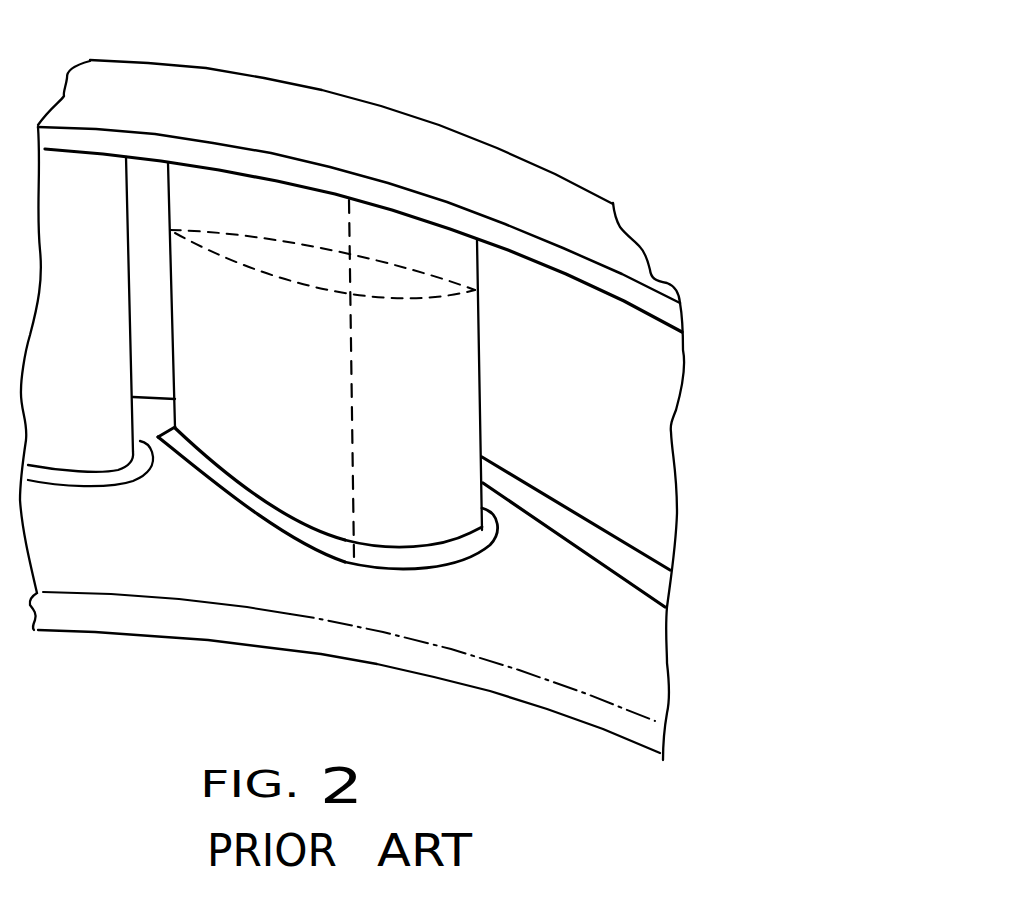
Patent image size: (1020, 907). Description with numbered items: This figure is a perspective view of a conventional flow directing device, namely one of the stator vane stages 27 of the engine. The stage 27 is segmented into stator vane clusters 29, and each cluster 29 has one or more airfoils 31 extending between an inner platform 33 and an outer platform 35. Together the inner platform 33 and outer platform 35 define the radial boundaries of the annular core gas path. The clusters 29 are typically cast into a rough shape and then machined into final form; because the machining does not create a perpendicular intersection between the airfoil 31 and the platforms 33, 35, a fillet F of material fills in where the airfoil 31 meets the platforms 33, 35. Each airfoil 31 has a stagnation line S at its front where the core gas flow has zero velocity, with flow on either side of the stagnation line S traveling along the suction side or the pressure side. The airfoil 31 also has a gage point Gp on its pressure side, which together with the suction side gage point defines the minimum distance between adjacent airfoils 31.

The stator vane stage 27 is at (628, 105).
The outer platform 35 is at (285, 131).
The airfoil 31 is at (90, 348).
The inner platform 33 is at (180, 573).
The stator vane cluster 29 is at (680, 698).
The stagnation line S is at (355, 395).
The fillet F is at (468, 548).
The pressure side gage point Gp is at (267, 474).